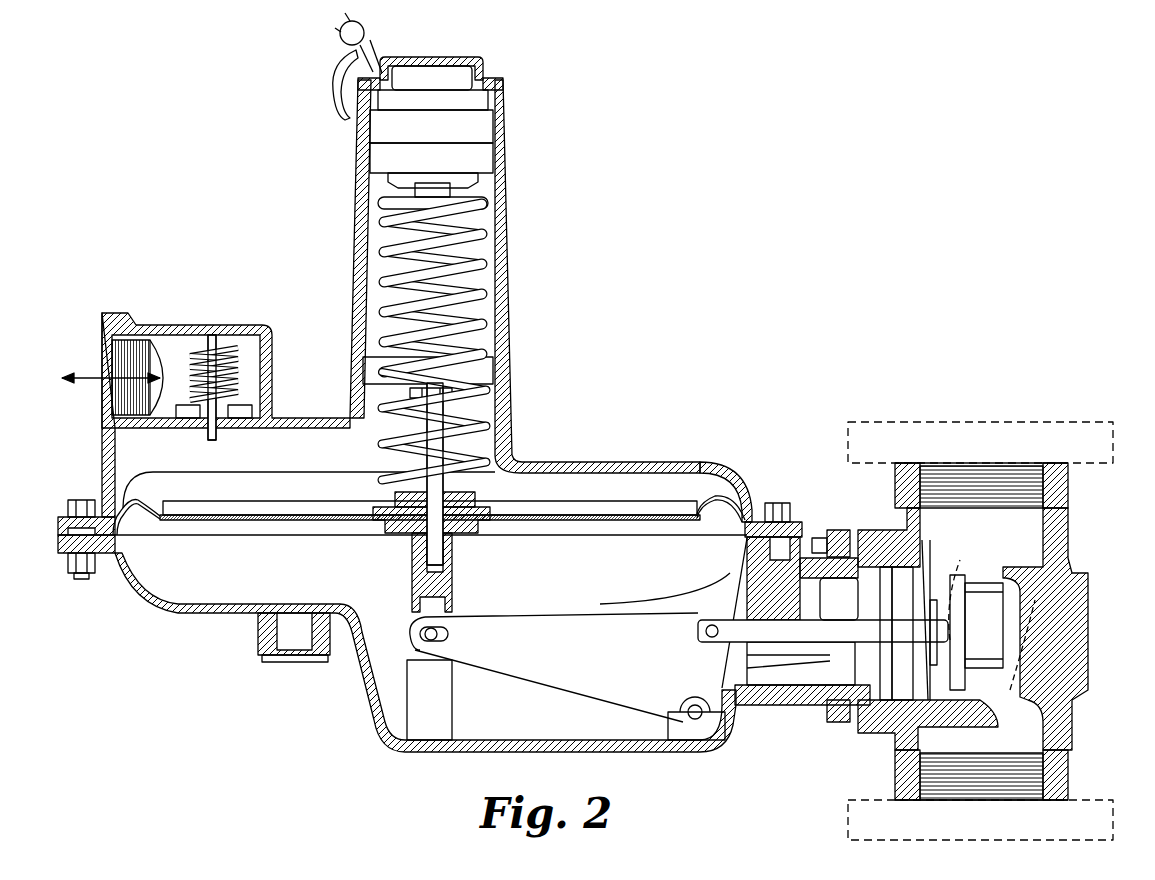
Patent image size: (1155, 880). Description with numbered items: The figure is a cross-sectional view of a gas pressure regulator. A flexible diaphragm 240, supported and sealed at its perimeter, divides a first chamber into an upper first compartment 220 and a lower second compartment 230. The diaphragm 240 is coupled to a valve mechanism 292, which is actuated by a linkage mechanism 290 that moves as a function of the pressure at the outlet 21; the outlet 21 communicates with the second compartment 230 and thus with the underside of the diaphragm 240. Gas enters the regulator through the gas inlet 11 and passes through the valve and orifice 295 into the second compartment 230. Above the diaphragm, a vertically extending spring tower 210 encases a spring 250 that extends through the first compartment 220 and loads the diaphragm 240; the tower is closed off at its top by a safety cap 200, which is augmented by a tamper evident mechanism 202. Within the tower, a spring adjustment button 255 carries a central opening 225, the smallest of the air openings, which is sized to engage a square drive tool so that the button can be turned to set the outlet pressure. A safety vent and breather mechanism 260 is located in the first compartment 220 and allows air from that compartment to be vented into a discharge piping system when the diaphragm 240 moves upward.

The safety cap 200 is at (486, 82).
The tamper evident mechanism 202 is at (340, 97).
The spring tower 210 is at (505, 160).
The first compartment 220 is at (703, 487).
The opening 225 is at (432, 188).
The second compartment 230 is at (160, 600).
The diaphragm 240 is at (197, 522).
The spring 250 is at (481, 243).
The spring adjustment button 255 is at (490, 180).
The safety vent and breather mechanism 260 is at (277, 306).
The linkage mechanism 290 is at (523, 665).
The valve mechanism 292 is at (965, 570).
The valve and orifice 295 is at (1003, 656).
The outlet 21 is at (982, 462).
The gas inlet 11 is at (982, 804).